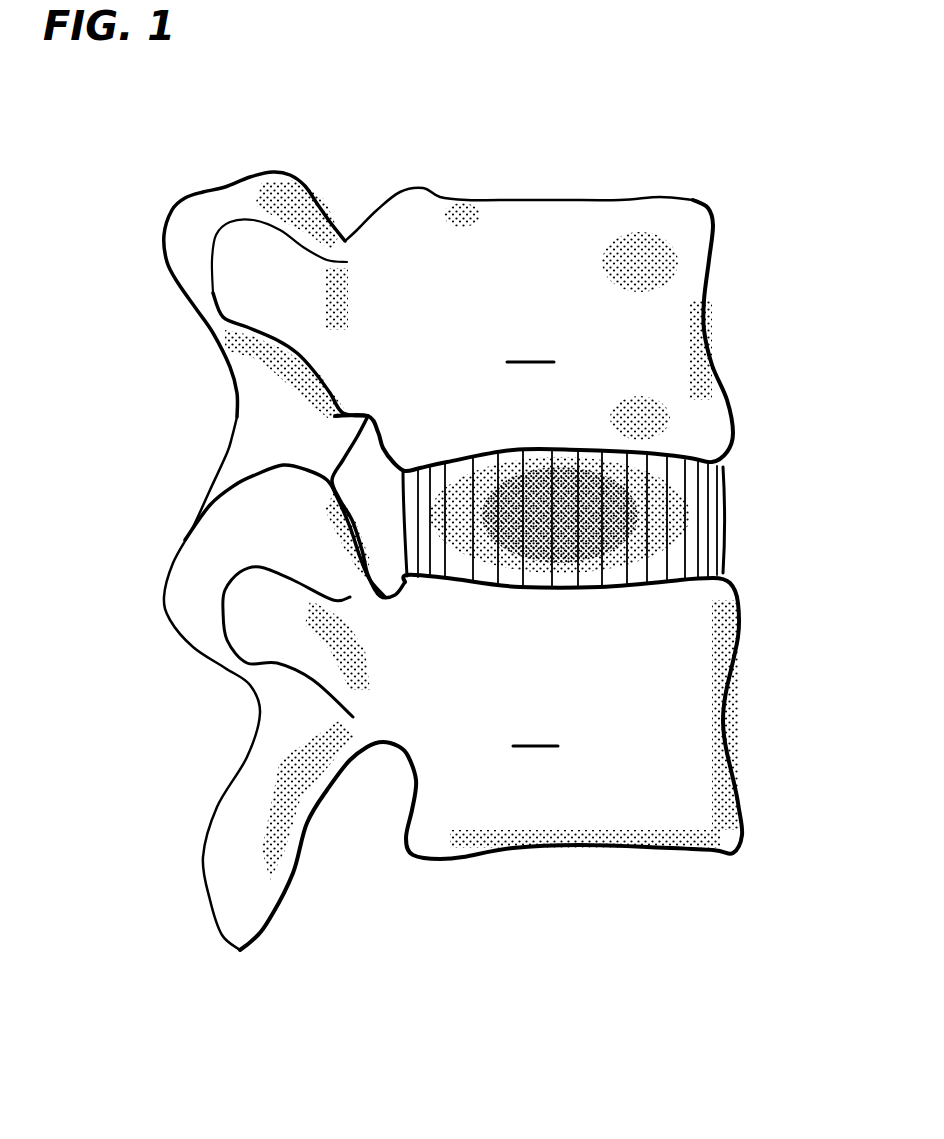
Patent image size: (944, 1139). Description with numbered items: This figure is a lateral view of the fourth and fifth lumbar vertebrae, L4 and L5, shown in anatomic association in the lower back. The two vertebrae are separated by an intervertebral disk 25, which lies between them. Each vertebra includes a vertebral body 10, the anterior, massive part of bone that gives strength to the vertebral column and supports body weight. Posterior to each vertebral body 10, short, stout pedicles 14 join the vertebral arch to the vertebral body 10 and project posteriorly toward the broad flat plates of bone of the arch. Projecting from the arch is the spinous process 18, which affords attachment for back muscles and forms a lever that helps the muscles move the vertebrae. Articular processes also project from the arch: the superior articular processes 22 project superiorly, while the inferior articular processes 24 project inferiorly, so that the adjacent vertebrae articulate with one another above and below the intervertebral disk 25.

The vertebral body 10 is at (683, 333).
The pedicles 14 is at (353, 270).
The spinous process 18 is at (237, 260).
The superior articular processes 22 is at (188, 210).
The inferior articular processes 24 is at (250, 440).
The intervertebral disk 25 is at (690, 510).